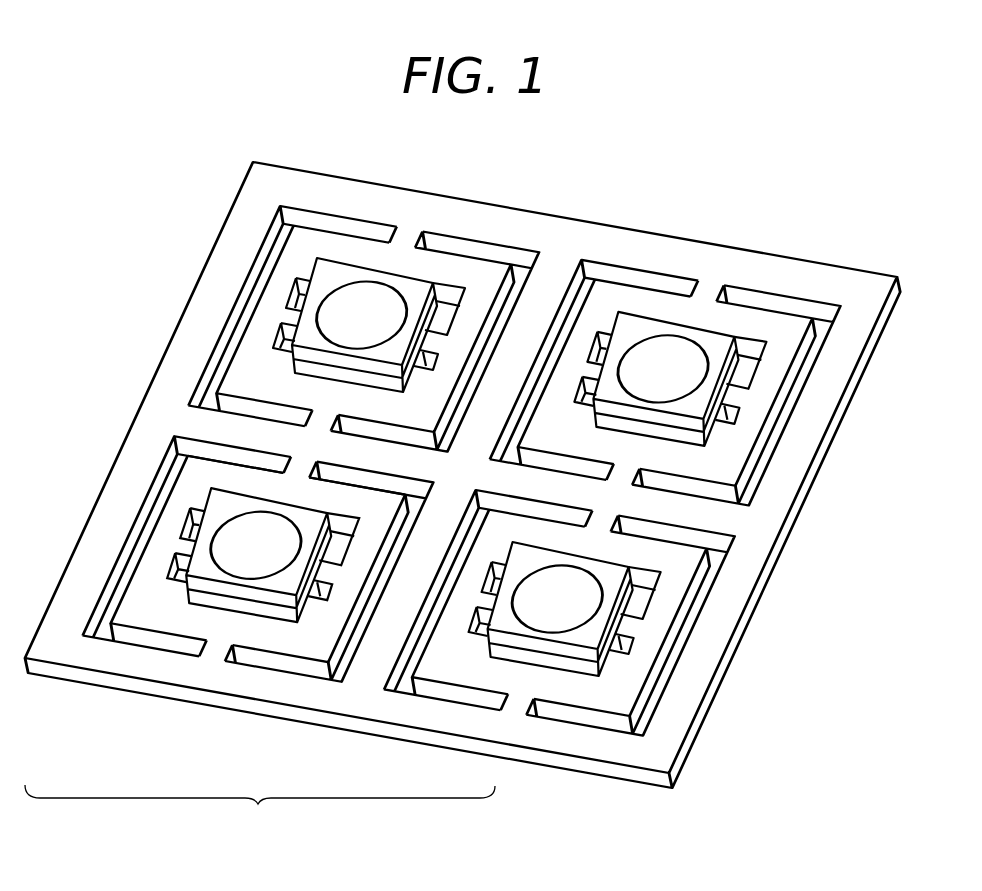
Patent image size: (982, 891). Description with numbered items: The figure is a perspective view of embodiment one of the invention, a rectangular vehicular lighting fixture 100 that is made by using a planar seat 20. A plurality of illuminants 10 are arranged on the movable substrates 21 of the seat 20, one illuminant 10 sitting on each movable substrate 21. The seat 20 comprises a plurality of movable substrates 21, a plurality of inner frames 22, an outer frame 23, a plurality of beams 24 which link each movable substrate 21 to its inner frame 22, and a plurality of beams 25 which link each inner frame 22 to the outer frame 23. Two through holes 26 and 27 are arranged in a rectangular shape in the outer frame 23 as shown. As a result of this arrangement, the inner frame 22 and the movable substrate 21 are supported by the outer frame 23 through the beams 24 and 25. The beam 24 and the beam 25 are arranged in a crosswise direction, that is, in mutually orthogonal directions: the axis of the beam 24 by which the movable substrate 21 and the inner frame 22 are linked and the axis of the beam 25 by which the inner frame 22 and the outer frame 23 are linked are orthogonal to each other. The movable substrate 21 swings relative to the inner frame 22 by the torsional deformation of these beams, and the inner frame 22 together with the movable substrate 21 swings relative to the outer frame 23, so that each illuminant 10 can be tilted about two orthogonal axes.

The vehicular lighting fixture 100 is at (462, 497).
The illuminant 10 is at (233, 533).
The seat 20 is at (260, 809).
The movable substrate 21 is at (205, 600).
The inner frame 22 is at (137, 615).
The outer frame 23 is at (425, 711).
The beam 24 is at (330, 565).
The beam 25 is at (213, 653).
The through hole 26 is at (193, 527).
The through hole 27 is at (180, 548).